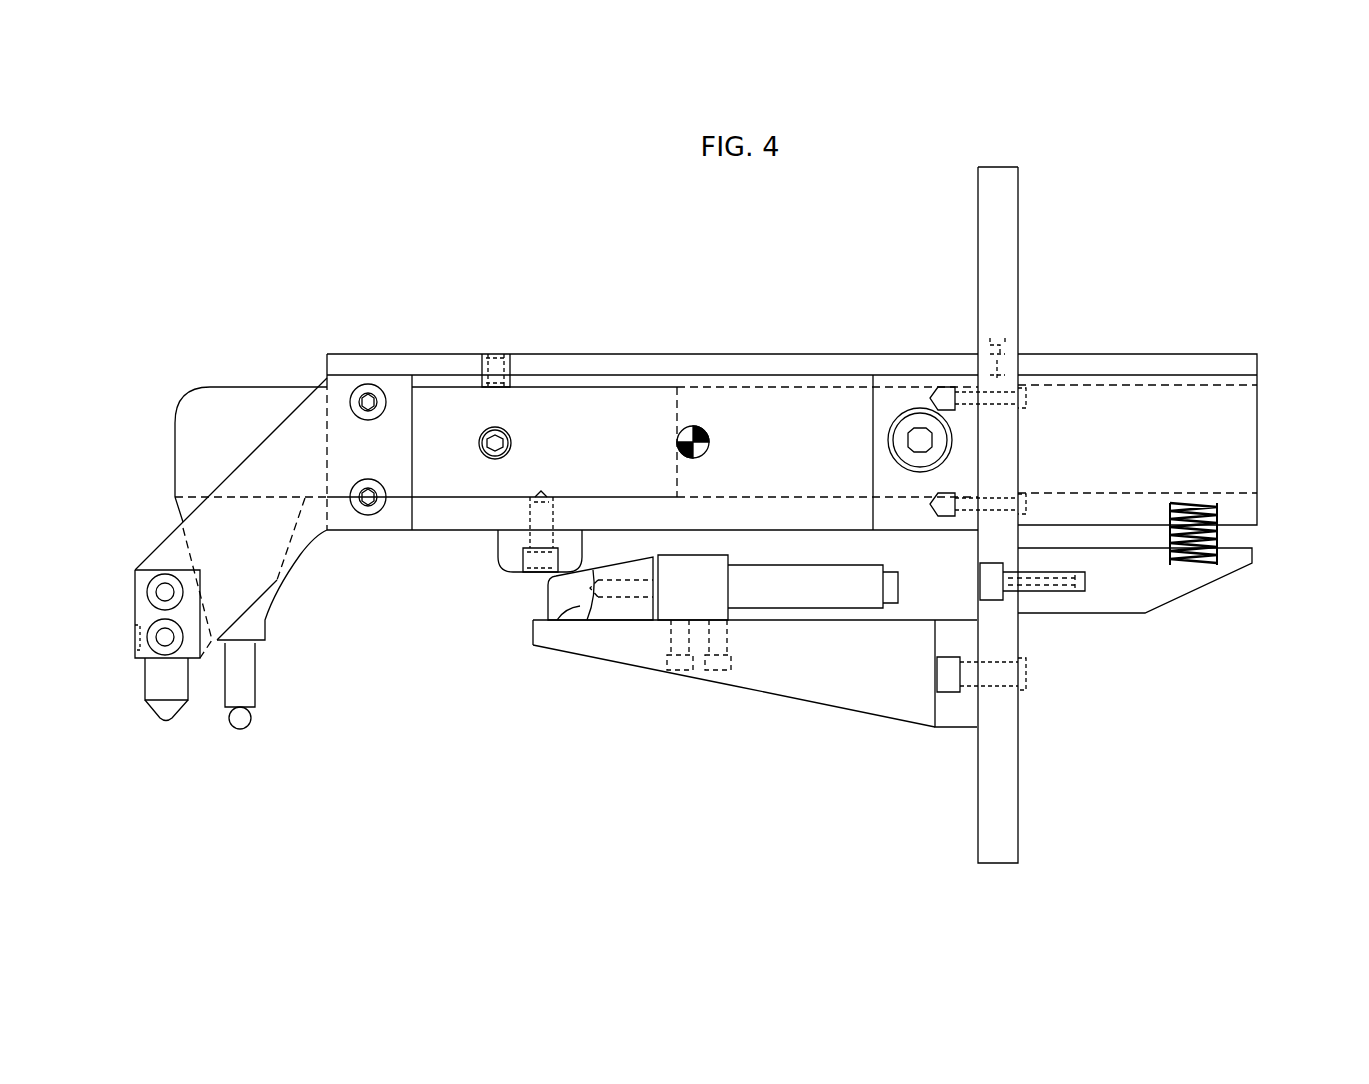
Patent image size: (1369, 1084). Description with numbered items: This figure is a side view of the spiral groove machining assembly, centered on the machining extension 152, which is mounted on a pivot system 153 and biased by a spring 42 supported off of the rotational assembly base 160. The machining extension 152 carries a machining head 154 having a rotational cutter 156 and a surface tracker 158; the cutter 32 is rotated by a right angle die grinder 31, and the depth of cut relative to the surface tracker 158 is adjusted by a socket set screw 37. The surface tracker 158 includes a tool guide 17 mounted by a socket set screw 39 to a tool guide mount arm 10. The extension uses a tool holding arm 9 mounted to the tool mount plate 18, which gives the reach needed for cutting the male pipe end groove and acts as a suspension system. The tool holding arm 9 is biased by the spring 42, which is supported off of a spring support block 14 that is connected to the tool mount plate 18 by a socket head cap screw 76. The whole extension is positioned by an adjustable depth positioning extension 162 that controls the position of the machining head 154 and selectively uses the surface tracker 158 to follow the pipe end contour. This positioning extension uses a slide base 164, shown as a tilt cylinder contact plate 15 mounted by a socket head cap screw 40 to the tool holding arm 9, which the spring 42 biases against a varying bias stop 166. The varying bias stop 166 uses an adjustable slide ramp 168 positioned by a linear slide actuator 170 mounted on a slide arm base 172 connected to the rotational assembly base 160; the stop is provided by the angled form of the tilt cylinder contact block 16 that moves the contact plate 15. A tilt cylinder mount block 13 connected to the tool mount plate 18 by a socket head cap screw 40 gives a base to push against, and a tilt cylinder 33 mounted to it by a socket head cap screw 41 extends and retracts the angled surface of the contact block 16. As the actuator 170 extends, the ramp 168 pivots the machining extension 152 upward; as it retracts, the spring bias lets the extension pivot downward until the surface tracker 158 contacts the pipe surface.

The tool holding arm 9 is at (1103, 395).
The tool guide mount arm 10 is at (240, 452).
The tilt cylinder mount block 13 is at (840, 712).
The spring support block 14 is at (1130, 622).
The tilt cylinder contact plate 15 is at (495, 567).
The tilt cylinder contact block 16 is at (548, 597).
The tool guide 17 is at (140, 687).
The tool mount plate 18 is at (1020, 210).
The right angle die grinder 31 is at (170, 448).
The cutter 32 is at (245, 735).
The tilt cylinder 33 is at (812, 560).
The socket set screw 37 is at (488, 350).
The socket set screw 39 is at (130, 642).
The socket head cap screw 40 is at (540, 582).
The socket head cap screw 41 is at (675, 674).
The spring 42 is at (1222, 540).
The socket head cap screw 76 is at (1040, 597).
The machining extension 152 is at (633, 287).
The pivot system 153 is at (707, 425).
The machining head 154 is at (265, 372).
The rotational cutter 156 is at (265, 702).
The surface tracker 158 is at (150, 724).
The rotational assembly base 160 is at (977, 168).
The adjustable depth positioning extension 162 is at (725, 702).
The slide base 164 is at (490, 547).
The varying bias stop 166 is at (575, 617).
The adjustable slide ramp 168 is at (598, 602).
The linear slide actuator 170 is at (783, 610).
The slide arm base 172 is at (880, 720).